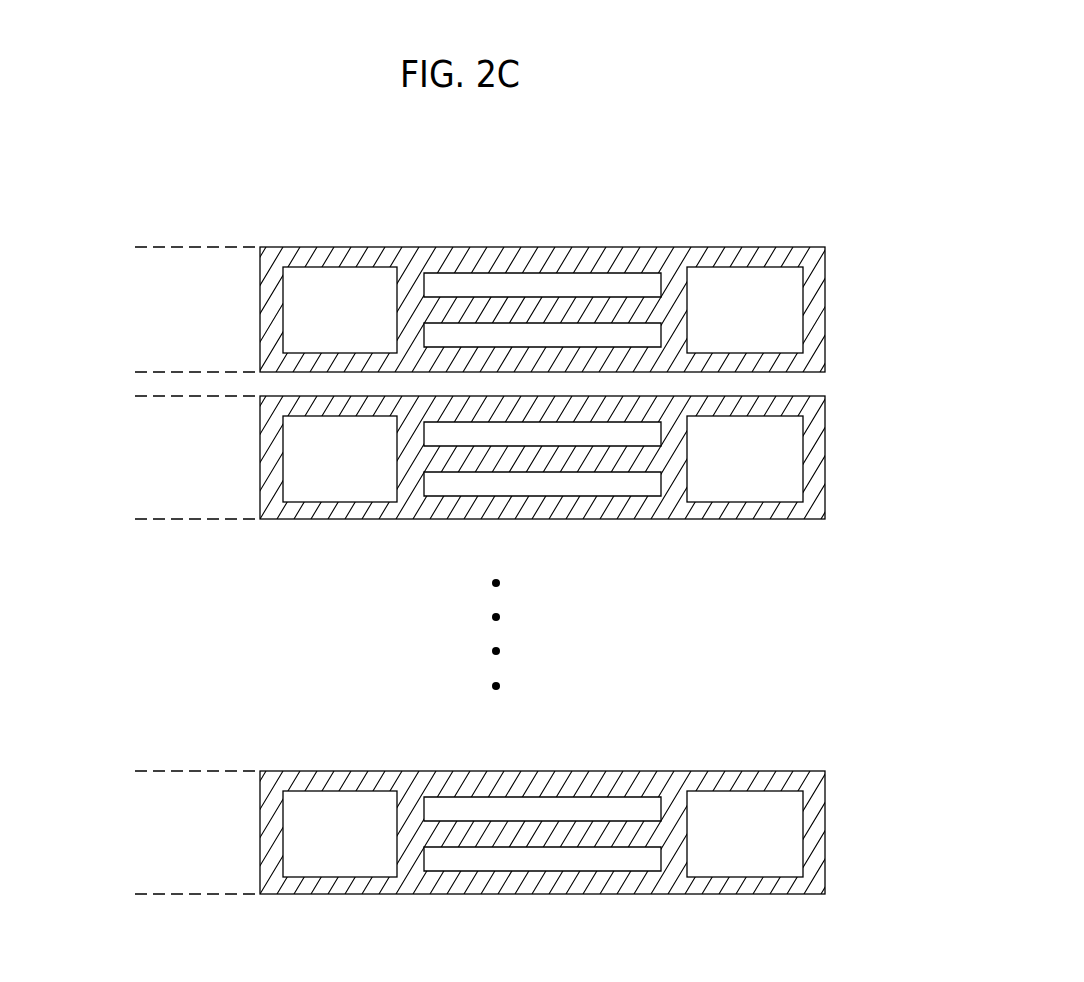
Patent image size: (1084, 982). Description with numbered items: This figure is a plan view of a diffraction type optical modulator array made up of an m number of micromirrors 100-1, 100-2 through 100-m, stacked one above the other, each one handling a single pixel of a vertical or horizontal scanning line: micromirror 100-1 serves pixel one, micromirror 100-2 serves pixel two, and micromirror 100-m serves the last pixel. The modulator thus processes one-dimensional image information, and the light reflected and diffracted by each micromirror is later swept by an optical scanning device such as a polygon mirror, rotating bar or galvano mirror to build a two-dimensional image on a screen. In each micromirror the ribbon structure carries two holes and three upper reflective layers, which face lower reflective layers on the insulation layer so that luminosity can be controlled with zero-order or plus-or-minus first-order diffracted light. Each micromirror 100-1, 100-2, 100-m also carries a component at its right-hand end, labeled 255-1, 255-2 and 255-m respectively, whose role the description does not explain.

The micromirror 100-1 is at (485, 309).
The micromirror 100-2 is at (485, 457).
The micromirror 100-m is at (485, 832).
The PZT actuator of pixel #1 255-1 is at (790, 314).
The PZT actuator of pixel #2 255-2 is at (790, 453).
The PZT actuator of pixel #m 255-m is at (788, 832).